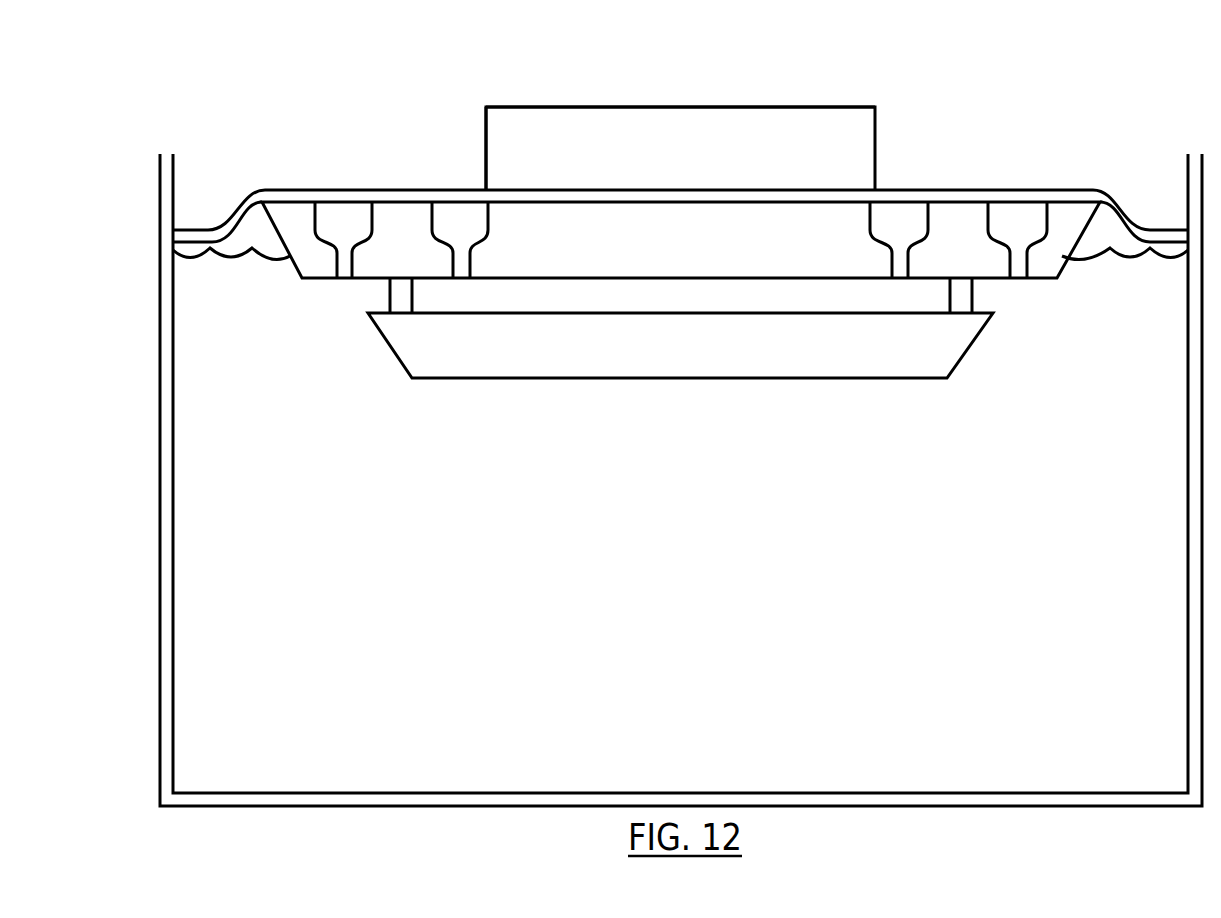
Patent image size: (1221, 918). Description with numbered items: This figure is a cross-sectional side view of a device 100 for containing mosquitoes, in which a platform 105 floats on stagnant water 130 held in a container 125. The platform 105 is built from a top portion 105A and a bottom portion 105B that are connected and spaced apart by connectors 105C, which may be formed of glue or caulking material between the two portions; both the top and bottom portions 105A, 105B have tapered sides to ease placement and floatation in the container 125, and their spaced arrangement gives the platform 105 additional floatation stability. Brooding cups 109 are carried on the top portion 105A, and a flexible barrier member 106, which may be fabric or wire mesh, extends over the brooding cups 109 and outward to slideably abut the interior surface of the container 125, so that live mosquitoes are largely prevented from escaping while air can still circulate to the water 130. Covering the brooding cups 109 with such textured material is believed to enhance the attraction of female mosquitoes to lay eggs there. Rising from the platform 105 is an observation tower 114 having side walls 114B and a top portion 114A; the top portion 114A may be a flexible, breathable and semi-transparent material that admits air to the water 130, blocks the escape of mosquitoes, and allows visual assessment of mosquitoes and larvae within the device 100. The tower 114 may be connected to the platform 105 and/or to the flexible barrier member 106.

The device 100 is at (1014, 123).
The platform 105 is at (680, 304).
The top portion 105A is at (292, 264).
The bottom portion 105B is at (389, 345).
The connectors 105C is at (388, 292).
The flexible barrier member 106 is at (1130, 217).
The brooding cups 109 is at (1013, 215).
The observation tower 114 is at (875, 155).
The top portion 114A is at (738, 107).
The side walls 114B is at (486, 155).
The container 125 is at (160, 492).
The stagnant water 130 is at (698, 664).